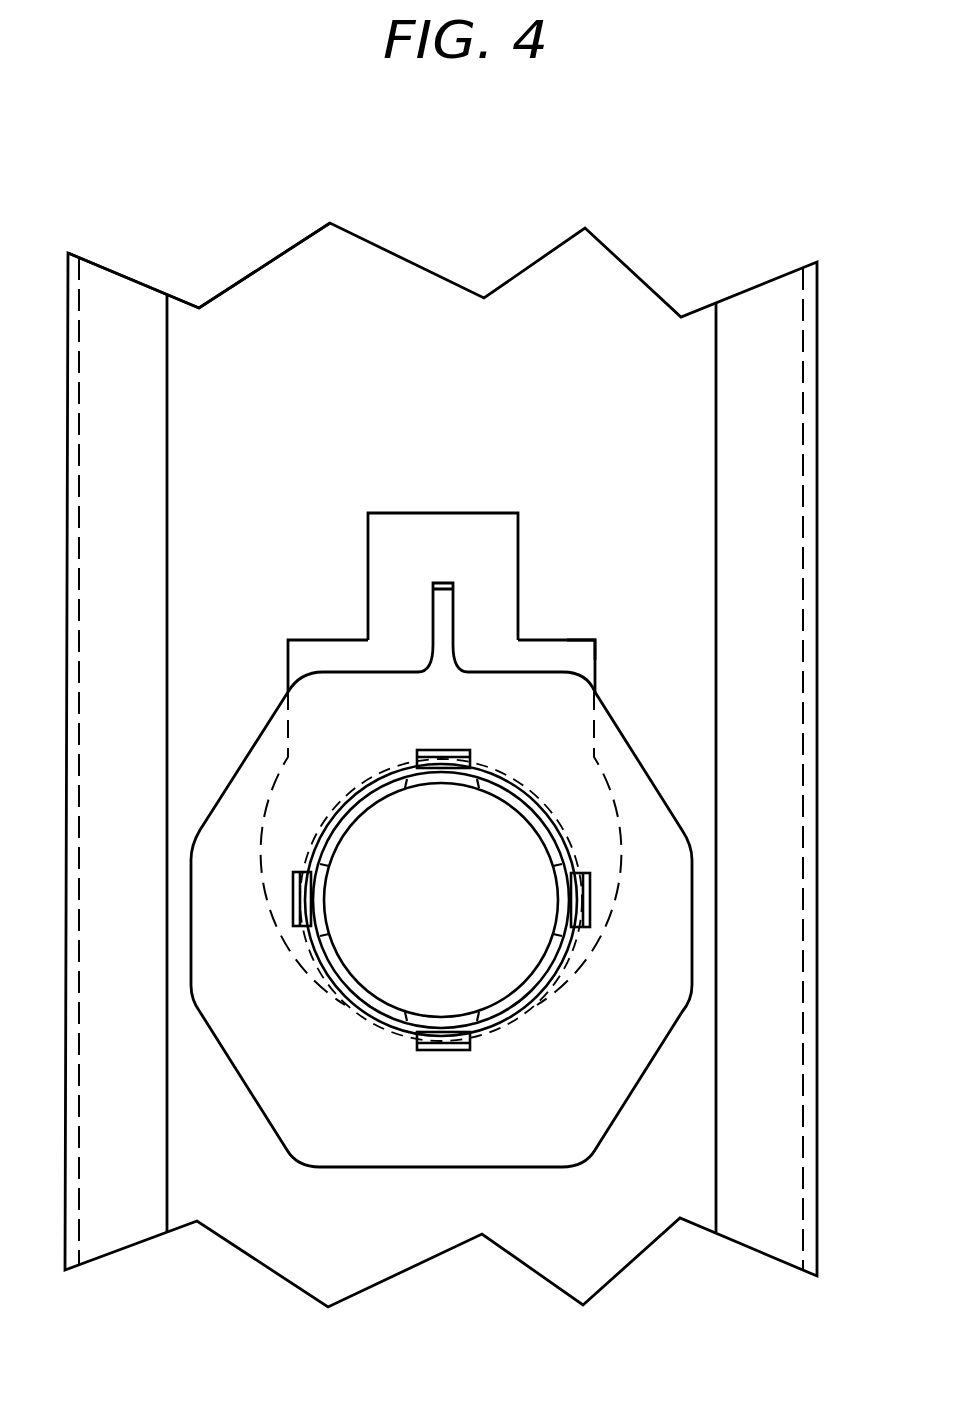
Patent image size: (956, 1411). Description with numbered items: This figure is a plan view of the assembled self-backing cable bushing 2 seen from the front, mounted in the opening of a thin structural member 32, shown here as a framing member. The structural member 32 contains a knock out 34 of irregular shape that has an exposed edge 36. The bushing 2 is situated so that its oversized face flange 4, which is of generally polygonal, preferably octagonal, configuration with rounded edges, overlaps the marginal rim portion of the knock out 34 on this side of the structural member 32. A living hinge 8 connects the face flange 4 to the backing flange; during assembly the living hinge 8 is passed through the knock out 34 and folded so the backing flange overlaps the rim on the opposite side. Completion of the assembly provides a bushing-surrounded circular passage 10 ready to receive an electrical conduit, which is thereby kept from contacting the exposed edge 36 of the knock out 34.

The self-backing cable bushing 2 is at (243, 1133).
The face flange 4 is at (610, 1083).
The living hinge 8 is at (440, 583).
The circular passage 10 is at (482, 822).
The structural member 32 is at (290, 283).
The knock out 34 is at (500, 528).
The exposed edge 36 is at (567, 641).